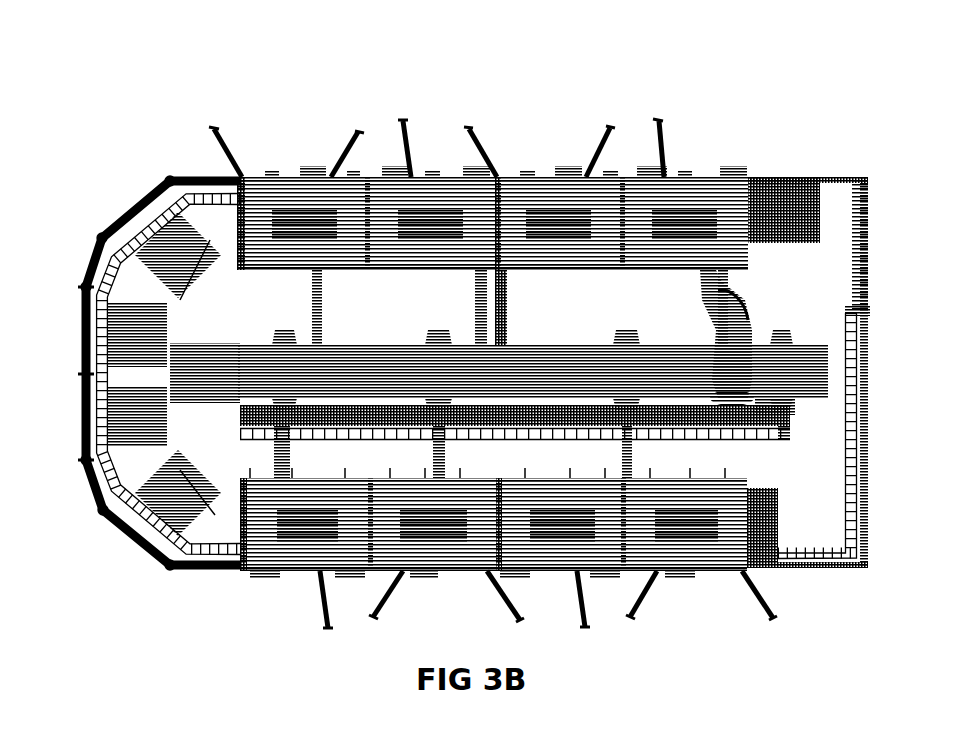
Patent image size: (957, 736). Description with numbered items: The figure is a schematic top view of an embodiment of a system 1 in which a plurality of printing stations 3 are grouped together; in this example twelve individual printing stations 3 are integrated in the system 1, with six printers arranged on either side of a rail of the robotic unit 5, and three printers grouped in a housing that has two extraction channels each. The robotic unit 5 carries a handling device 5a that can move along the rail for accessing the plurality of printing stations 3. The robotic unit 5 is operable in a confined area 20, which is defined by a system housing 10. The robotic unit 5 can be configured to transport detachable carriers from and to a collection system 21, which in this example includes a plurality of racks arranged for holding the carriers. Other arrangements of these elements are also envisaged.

The system 1 is at (147, 117).
The printing stations 3 is at (282, 153).
The robotic unit 5 is at (777, 308).
The handling device 5a is at (743, 298).
The system housing 10 is at (828, 562).
The confined area 20 is at (602, 324).
The collection system 21 is at (115, 290).